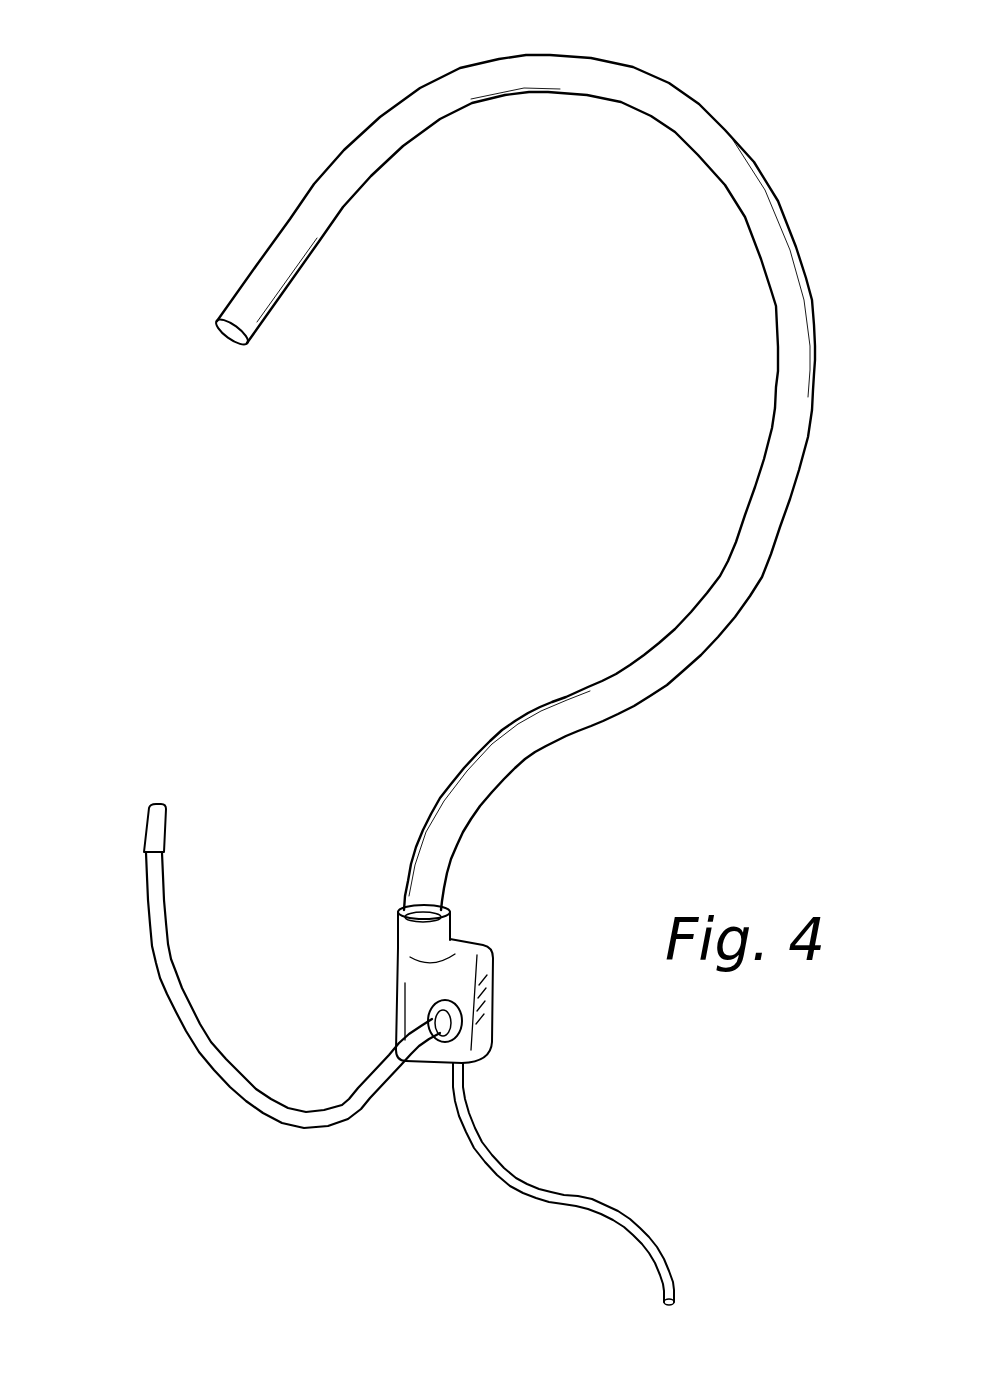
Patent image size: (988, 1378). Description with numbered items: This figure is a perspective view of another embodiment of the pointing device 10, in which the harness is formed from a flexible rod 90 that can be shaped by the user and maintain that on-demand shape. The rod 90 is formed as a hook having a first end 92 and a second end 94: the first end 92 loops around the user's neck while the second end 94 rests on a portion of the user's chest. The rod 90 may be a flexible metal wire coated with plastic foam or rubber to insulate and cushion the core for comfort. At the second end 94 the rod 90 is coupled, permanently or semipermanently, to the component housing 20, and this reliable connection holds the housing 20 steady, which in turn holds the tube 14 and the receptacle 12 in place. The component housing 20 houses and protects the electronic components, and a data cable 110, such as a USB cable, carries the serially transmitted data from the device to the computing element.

The pointing device 10 is at (128, 117).
The receptacle 12 is at (120, 838).
The tube 14 is at (225, 1118).
The component housing 20 is at (518, 993).
The flexible rod 90 is at (837, 428).
The first end 92 is at (208, 335).
The second end 94 is at (450, 893).
The data cable 110 is at (495, 1185).